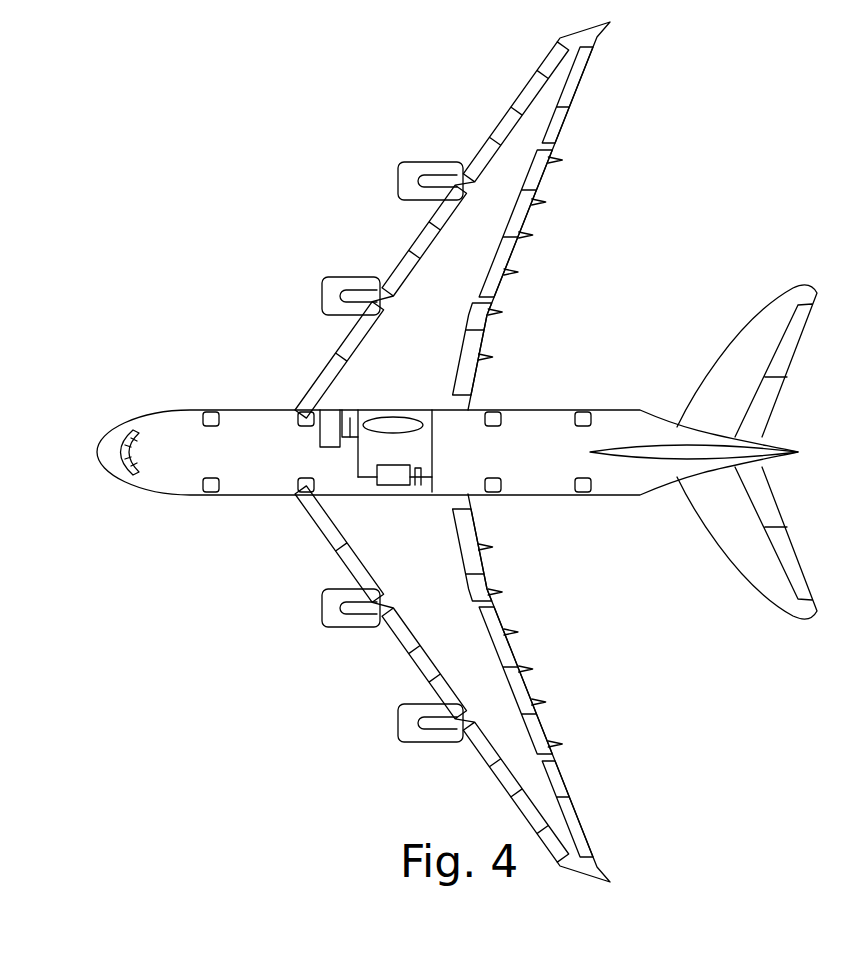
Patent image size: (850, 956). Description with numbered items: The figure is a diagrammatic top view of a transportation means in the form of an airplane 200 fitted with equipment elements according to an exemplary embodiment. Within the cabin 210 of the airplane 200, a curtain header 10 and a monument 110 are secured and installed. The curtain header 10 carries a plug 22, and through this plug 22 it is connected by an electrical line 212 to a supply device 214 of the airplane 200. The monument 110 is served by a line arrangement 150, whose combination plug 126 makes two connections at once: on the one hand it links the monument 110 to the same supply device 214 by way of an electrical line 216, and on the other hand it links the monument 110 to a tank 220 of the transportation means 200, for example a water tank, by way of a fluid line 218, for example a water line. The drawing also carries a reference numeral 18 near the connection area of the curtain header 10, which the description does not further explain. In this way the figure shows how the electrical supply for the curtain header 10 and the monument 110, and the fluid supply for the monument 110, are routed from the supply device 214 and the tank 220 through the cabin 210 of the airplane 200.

The airplane 200 is at (148, 238).
The cabin 210 is at (178, 463).
The supply device 214 is at (338, 528).
The tank 220 is at (469, 407).
The monument 110 is at (318, 410).
The combination plug 126 is at (350, 410).
The line arrangement 150 is at (344, 410).
The fluid line 218 is at (362, 408).
The curtain header 10 is at (440, 430).
The electrical line 216 is at (355, 472).
The electrical line 212 is at (395, 488).
The component 18 is at (421, 488).
The plug 22 is at (420, 466).